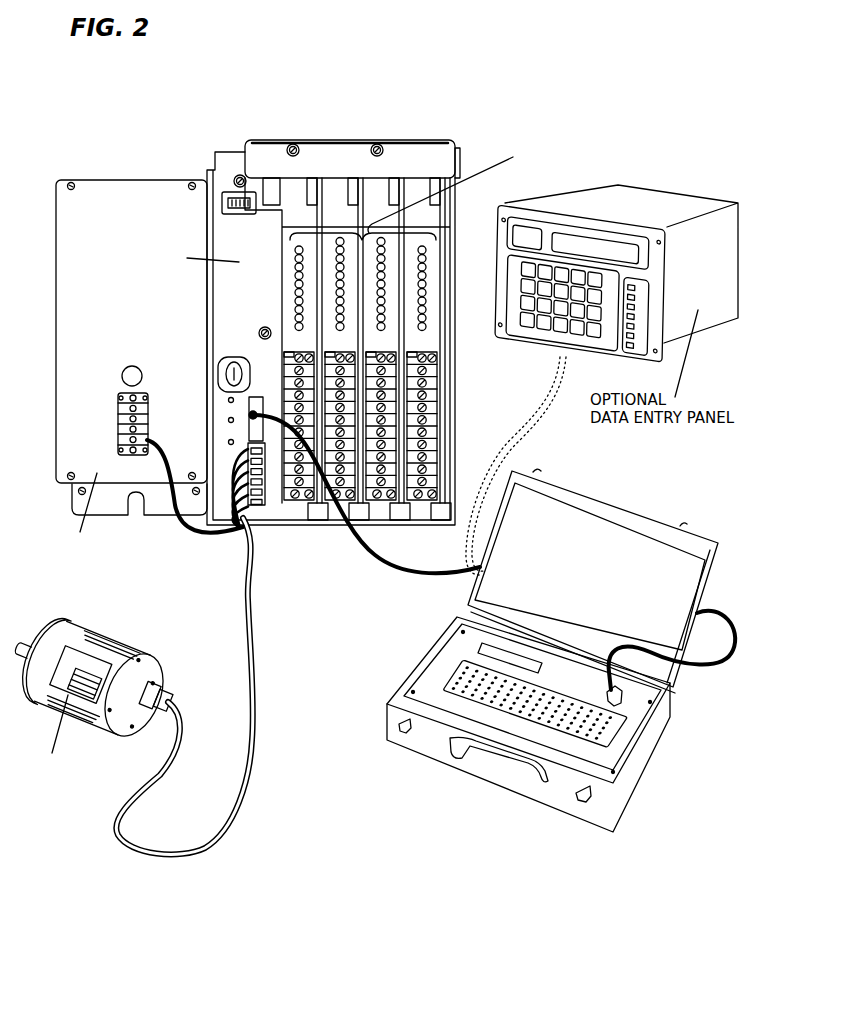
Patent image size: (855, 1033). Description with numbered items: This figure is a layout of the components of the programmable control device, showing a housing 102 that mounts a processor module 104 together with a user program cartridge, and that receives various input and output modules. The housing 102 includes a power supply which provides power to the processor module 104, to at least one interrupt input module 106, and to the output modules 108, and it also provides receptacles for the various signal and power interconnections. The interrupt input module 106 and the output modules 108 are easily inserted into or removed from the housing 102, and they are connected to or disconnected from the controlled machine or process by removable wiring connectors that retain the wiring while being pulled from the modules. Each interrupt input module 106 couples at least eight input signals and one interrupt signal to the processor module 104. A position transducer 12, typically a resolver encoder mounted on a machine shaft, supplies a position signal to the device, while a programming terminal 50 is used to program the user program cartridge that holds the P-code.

The housing 102 is at (200, 155).
The processor module 104 is at (228, 355).
The interrupt input module 106 is at (433, 317).
The output modules 108 is at (380, 212).
The position transducer 12 is at (112, 628).
The programming terminal 50 is at (428, 745).